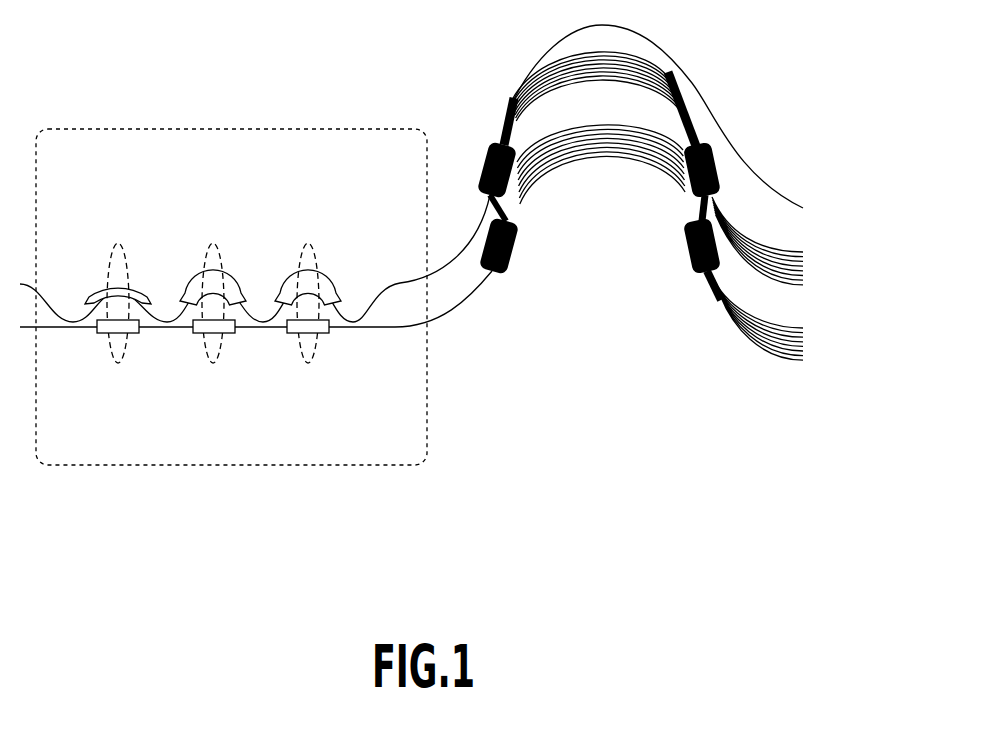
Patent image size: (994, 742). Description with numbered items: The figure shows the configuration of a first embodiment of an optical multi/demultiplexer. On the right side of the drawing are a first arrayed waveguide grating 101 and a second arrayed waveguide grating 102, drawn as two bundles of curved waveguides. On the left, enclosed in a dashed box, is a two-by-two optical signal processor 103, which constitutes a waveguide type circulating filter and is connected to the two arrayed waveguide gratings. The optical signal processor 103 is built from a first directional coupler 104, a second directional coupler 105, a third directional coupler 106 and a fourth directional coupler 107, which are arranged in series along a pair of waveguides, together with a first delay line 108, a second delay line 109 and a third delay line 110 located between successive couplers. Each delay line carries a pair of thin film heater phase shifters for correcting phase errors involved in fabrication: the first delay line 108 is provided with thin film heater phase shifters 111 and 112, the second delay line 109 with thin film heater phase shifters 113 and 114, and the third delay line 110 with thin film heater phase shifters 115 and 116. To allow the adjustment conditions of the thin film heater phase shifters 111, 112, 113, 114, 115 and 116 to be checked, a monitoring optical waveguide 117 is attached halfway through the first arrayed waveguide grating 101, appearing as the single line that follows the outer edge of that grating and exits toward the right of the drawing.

The first arrayed waveguide grating 101 is at (640, 72).
The second arrayed waveguide grating 102 is at (640, 147).
The 2×2 optical signal processor 103 is at (374, 128).
The first directional coupler 104 is at (55, 330).
The second directional coupler 105 is at (148, 330).
The third directional coupler 106 is at (243, 330).
The fourth directional coupler 107 is at (352, 330).
The first delay line 108 is at (117, 244).
The second delay line 109 is at (212, 244).
The third delay line 110 is at (307, 244).
The thin film heater phase shifter 111 is at (95, 286).
The thin film heater phase shifter 112 is at (101, 333).
The thin film heater phase shifter 113 is at (195, 275).
The thin film heater phase shifter 114 is at (196, 333).
The thin film heater phase shifter 115 is at (290, 275).
The thin film heater phase shifter 116 is at (291, 333).
The monitoring optical waveguide 117 is at (755, 188).